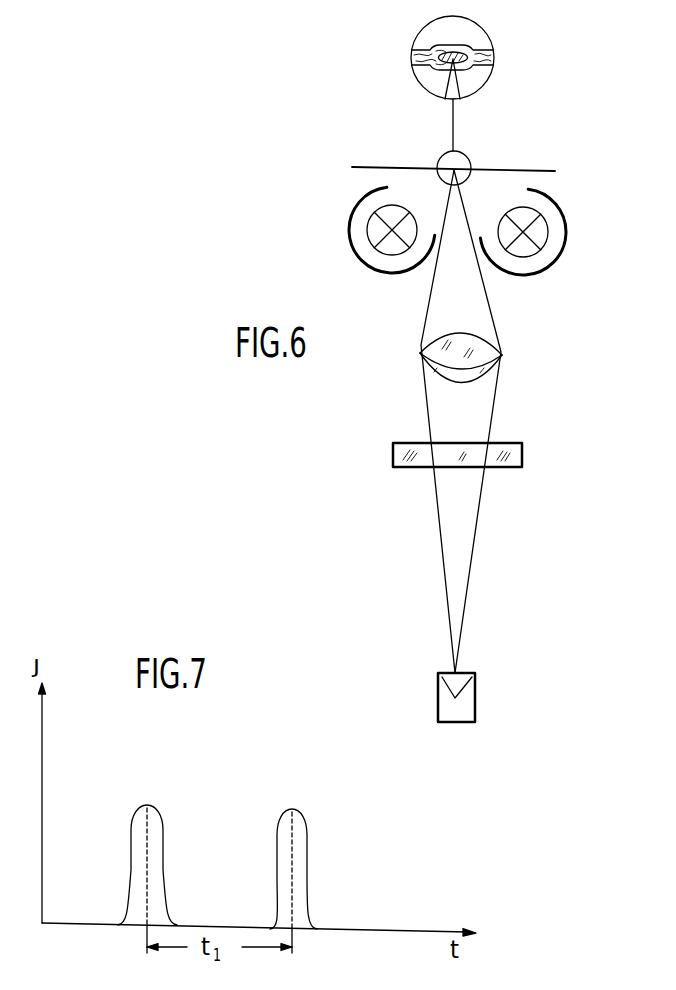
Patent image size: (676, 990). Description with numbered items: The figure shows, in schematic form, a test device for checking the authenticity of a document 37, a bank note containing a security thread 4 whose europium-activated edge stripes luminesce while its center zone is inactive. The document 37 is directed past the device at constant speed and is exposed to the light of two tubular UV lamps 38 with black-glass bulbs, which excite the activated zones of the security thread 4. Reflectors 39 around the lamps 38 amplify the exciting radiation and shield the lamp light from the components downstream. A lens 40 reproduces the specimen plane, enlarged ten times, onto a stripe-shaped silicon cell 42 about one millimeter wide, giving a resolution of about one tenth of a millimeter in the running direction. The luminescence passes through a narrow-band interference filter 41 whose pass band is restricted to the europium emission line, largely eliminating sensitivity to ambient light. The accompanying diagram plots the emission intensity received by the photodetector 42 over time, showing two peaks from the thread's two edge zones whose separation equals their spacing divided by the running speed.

The security thread 4 is at (437, 68).
The document 37 is at (487, 58).
The tubular UV lamps 38 is at (383, 250).
The reflectors 39 is at (349, 238).
The lens 40 is at (505, 358).
The narrow-band optical filter 41 is at (523, 458).
The silicon cell 42 is at (477, 692).